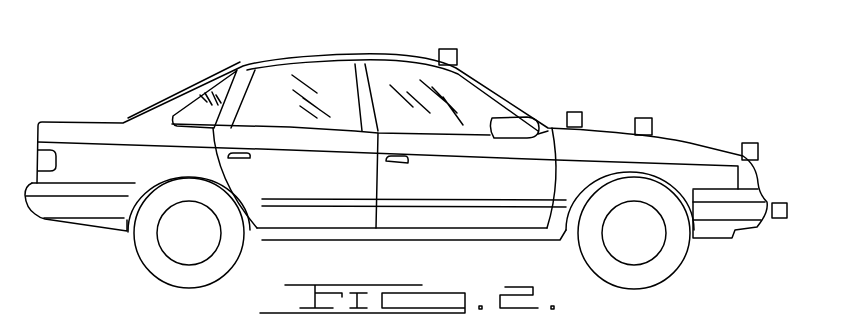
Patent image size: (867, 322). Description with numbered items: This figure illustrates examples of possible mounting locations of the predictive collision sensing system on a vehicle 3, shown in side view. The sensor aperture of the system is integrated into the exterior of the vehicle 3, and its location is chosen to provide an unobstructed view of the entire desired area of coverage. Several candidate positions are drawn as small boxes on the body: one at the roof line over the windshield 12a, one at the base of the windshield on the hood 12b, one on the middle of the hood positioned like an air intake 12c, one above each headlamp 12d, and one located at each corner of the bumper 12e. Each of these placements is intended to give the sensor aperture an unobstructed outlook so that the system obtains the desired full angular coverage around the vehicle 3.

The vehicle 3 is at (238, 66).
The sensor aperture at the roof line over the windshield 12a is at (454, 52).
The sensor aperture at the base of the windshield on the hood 12b is at (576, 119).
The sensor aperture on the middle of the hood 12c is at (648, 127).
The sensor aperture above each headlamp 12d is at (755, 151).
The sensor aperture at each corner of the bumper 12e is at (785, 210).